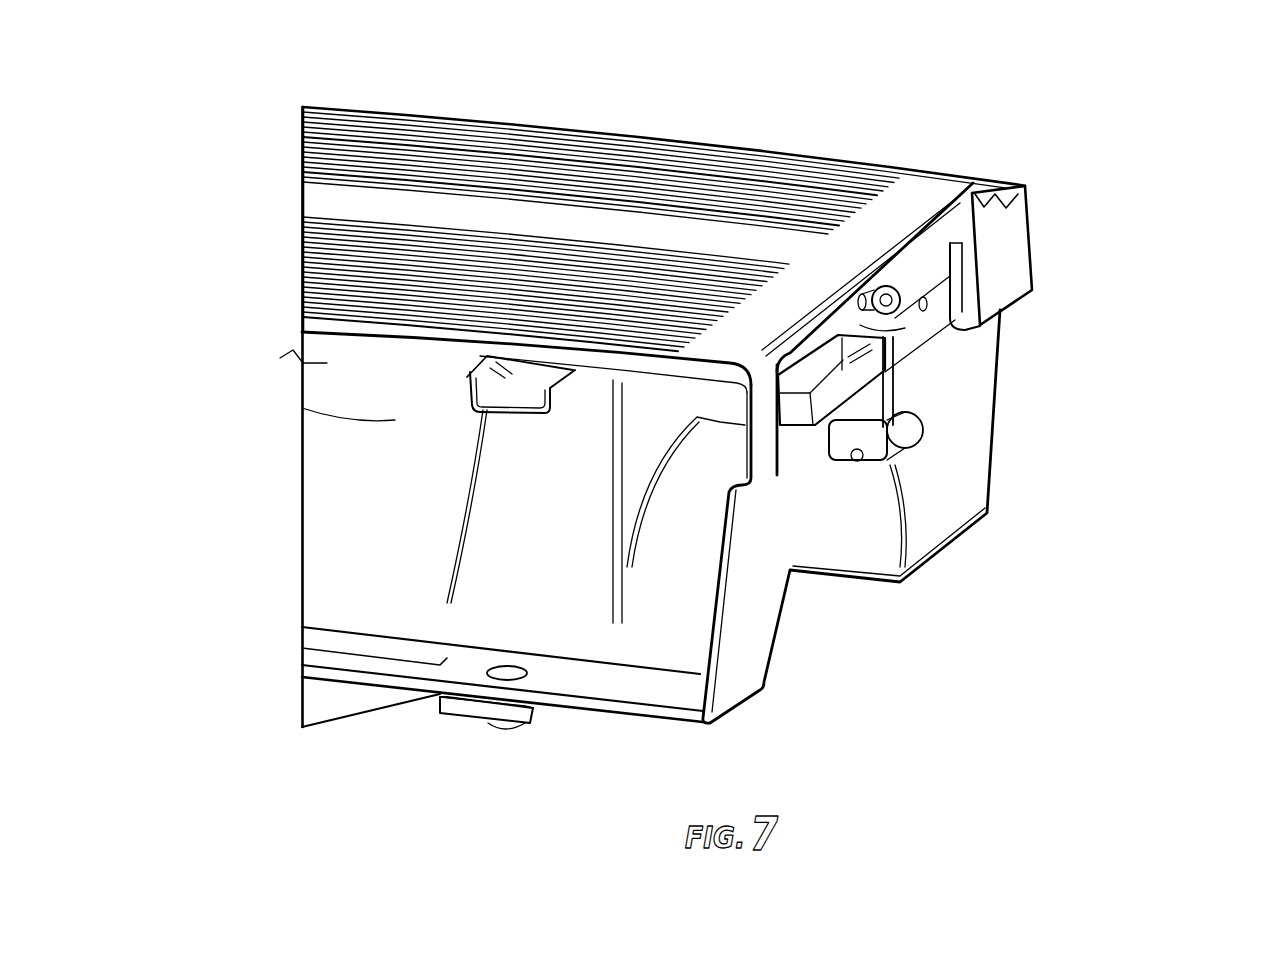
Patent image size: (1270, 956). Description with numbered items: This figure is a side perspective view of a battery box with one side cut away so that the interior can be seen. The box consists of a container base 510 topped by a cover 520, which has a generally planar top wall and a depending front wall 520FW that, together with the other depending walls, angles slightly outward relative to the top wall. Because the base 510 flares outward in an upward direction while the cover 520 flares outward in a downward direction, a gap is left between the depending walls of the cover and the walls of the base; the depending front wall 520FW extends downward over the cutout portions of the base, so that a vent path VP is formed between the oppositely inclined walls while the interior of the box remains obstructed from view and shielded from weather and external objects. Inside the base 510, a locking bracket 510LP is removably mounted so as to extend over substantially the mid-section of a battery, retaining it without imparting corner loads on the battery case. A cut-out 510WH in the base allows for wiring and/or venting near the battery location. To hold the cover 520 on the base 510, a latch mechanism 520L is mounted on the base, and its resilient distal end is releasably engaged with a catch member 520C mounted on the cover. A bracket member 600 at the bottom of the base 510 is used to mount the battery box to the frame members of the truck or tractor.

The cover 520 is at (714, 176).
The container base 510 is at (990, 418).
The locking bracket 510LP is at (497, 373).
The cut-out 510WH is at (813, 346).
The catch member 520C is at (900, 378).
The latch mechanism 520L is at (972, 195).
The depending front wall 520FW is at (1003, 266).
The vent path VP is at (950, 340).
The bracket member 600 is at (450, 713).